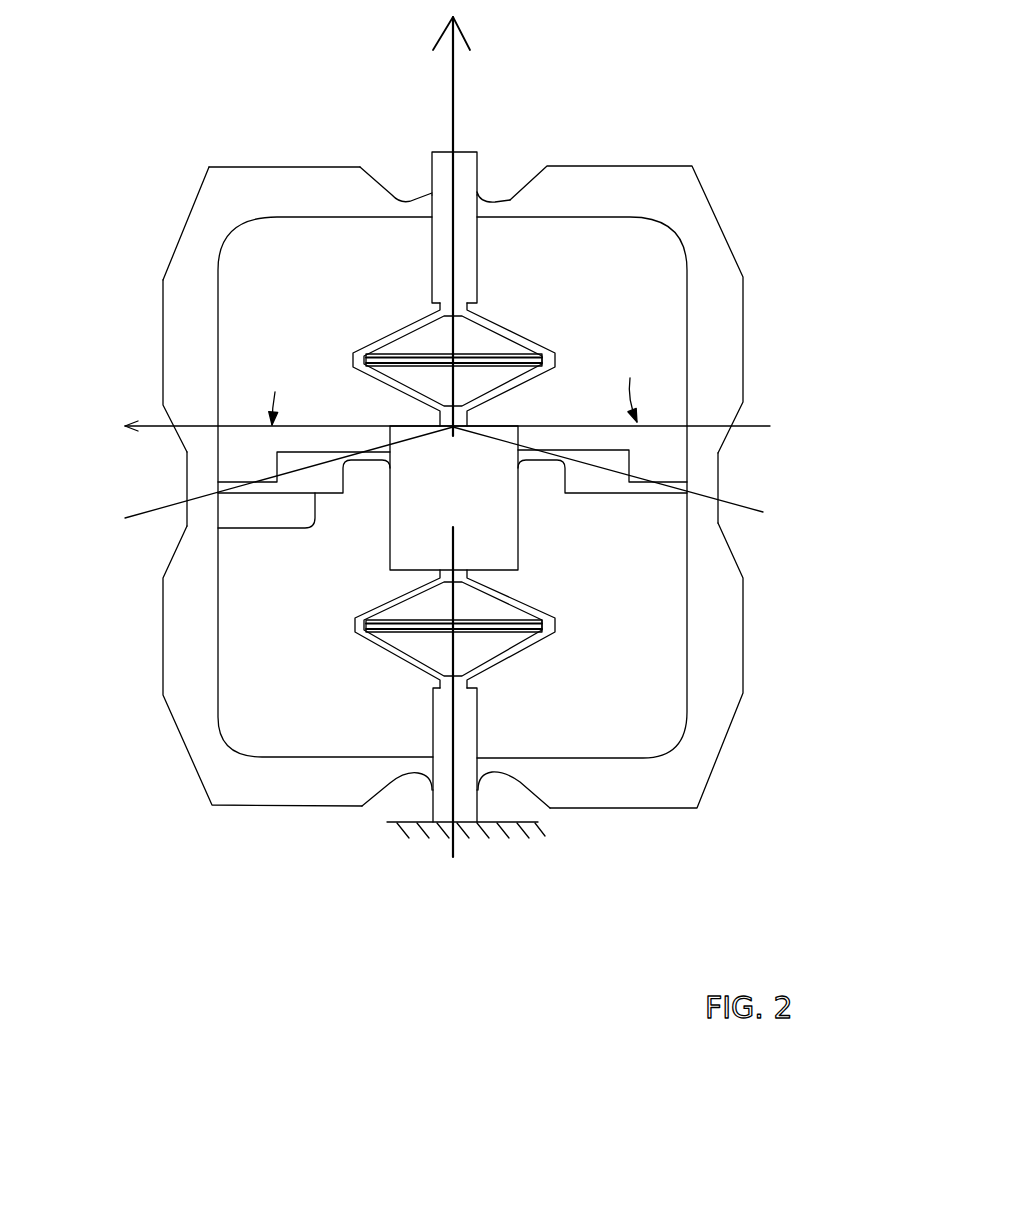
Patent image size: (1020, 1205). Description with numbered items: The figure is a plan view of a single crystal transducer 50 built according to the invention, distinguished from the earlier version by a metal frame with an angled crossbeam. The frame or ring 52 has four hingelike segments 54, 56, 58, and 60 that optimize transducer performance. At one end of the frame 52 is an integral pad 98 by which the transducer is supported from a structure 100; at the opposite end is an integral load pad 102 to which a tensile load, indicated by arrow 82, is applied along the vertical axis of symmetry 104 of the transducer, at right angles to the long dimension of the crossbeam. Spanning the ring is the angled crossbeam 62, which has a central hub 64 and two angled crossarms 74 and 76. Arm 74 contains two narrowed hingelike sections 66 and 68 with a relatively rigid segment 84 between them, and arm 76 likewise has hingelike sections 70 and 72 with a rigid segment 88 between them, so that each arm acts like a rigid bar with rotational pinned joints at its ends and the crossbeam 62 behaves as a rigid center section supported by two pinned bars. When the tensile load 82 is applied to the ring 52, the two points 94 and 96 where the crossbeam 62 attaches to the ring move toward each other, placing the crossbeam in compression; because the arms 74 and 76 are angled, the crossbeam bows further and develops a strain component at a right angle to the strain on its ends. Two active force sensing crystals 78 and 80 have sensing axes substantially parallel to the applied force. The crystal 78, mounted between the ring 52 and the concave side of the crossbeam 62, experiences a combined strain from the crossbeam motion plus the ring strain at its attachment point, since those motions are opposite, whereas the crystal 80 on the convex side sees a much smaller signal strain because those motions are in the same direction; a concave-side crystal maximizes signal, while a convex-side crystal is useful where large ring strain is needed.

The transducer 50 is at (232, 100).
The frame 52 is at (668, 163).
The hingelike segment 54 is at (403, 200).
The hingelike segment 56 is at (720, 476).
The hingelike segment 58 is at (500, 777).
The hingelike segment 60 is at (187, 472).
The crossbeam 62 is at (520, 532).
The hub 64 is at (472, 518).
The hingelike section 66 is at (245, 480).
The hingelike section 68 is at (375, 462).
The hingelike section 70 is at (532, 482).
The hingelike section 72 is at (653, 497).
The angled crossbeam arm 74 is at (330, 450).
The angled crossbeam arm 76 is at (592, 448).
The force sensing crystal 78 is at (347, 620).
The force sensing crystal 80 is at (417, 322).
The load arrow 82 is at (452, 77).
The segment 84 is at (285, 496).
The segment 88 is at (600, 450).
The attachment point 94 is at (463, 217).
The attachment point 96 is at (460, 758).
The integral pad 98 is at (437, 803).
The structure 100 is at (513, 820).
The integral load pad 102 is at (475, 163).
The vertical axis of symmetry 104 is at (450, 743).